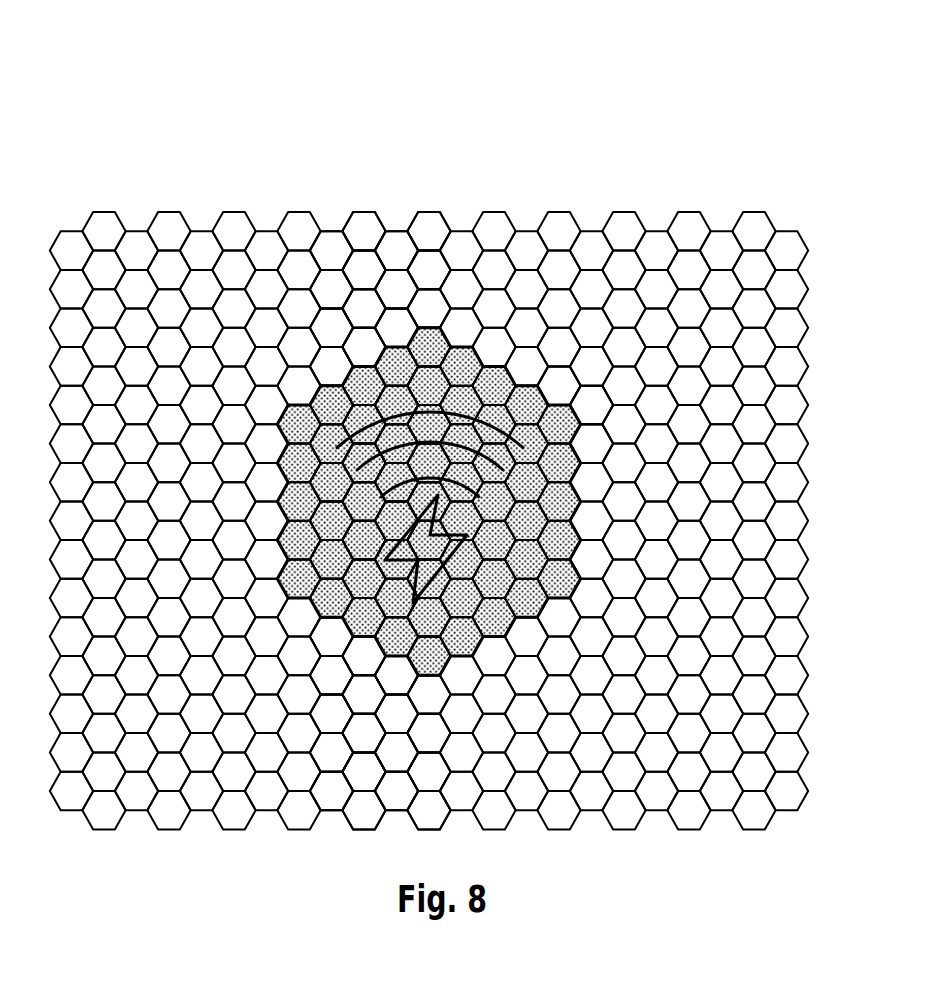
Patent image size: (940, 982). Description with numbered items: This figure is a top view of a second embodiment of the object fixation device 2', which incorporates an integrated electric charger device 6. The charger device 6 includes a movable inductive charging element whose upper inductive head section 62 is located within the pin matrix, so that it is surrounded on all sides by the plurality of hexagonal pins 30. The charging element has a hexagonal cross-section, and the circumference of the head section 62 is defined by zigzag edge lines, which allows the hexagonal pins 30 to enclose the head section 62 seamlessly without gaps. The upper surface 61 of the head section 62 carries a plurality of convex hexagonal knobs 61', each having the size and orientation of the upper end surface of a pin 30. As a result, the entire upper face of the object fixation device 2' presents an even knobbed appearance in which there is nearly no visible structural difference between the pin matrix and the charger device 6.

The object fixation device 2' is at (429, 440).
The pins 30 is at (385, 295).
The upper surface 61 is at (428, 402).
The convex hexagonal knobs 61' is at (714, 436).
The charger device 6 is at (449, 337).
The upper inductive head section 62 is at (516, 380).